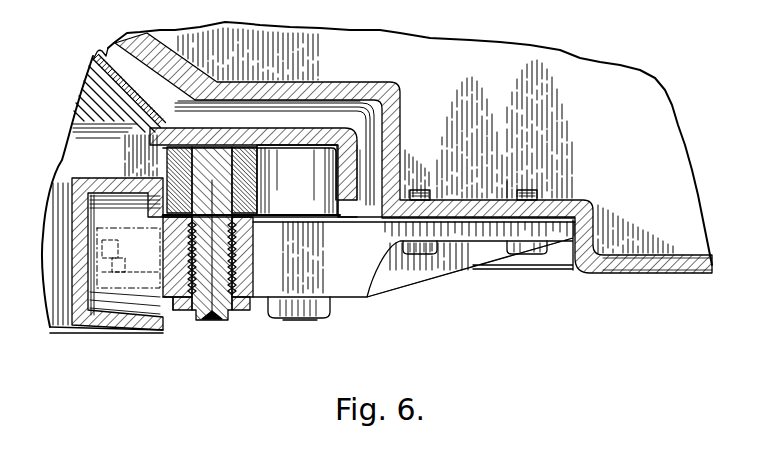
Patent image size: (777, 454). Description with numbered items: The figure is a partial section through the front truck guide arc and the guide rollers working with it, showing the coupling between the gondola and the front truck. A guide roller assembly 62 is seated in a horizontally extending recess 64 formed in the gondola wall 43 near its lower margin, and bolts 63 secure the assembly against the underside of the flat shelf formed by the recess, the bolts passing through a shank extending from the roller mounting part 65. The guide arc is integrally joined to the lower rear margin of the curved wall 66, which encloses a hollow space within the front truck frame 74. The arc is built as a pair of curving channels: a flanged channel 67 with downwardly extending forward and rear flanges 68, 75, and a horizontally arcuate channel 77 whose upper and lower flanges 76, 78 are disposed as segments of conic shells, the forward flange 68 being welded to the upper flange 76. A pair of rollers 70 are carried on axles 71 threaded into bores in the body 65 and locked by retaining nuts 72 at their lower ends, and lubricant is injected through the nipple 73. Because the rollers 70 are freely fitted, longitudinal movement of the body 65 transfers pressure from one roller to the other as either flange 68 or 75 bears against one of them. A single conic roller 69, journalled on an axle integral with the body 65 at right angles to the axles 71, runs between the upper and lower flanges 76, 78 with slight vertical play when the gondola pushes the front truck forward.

The gondola wall 43 is at (350, 87).
The guide roller assembly 62 is at (393, 306).
The bolts 63 is at (517, 246).
The recess 64 is at (553, 268).
The roller mounting part 65 is at (360, 251).
The curved wall 66 is at (92, 58).
The flanged channel 67 is at (274, 140).
The forward flange 68 is at (157, 154).
The single roller 69 is at (165, 313).
The rollers 70 is at (184, 156).
The axles 71 is at (250, 263).
The retaining nuts 72 is at (243, 305).
The nipple 73 is at (214, 322).
The front truck frame 74 is at (86, 107).
The rear flange 75 is at (353, 167).
The upper flange 76 is at (103, 180).
The arcuate channel 77 is at (72, 240).
The lower flange 78 is at (148, 333).